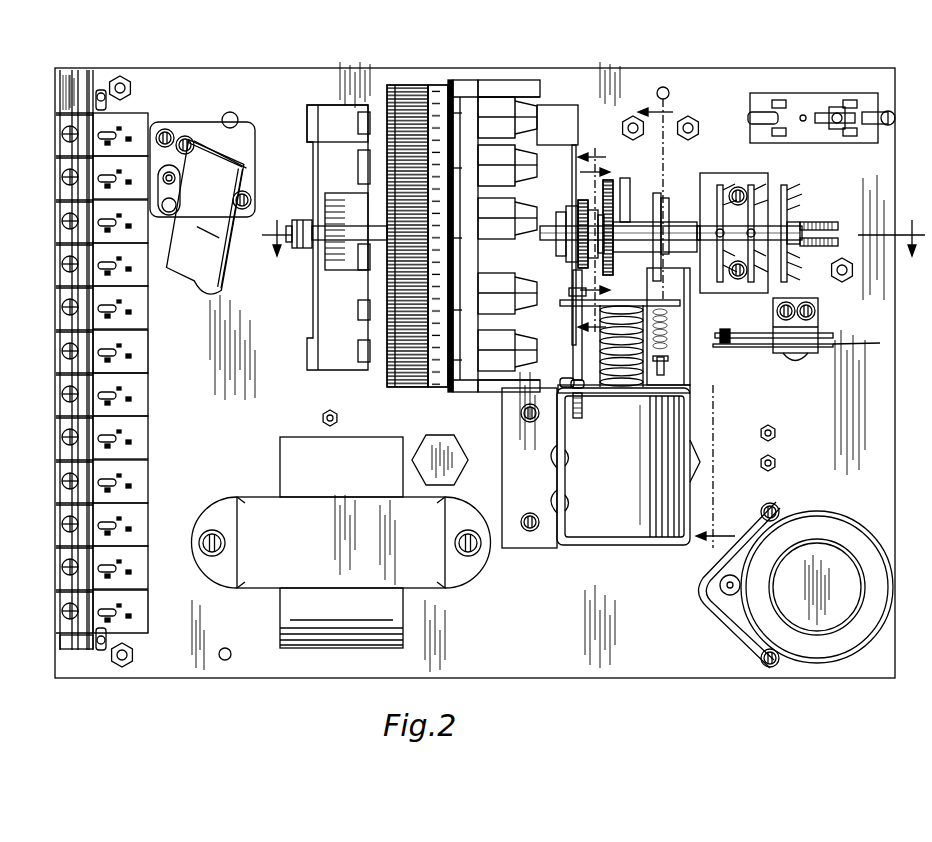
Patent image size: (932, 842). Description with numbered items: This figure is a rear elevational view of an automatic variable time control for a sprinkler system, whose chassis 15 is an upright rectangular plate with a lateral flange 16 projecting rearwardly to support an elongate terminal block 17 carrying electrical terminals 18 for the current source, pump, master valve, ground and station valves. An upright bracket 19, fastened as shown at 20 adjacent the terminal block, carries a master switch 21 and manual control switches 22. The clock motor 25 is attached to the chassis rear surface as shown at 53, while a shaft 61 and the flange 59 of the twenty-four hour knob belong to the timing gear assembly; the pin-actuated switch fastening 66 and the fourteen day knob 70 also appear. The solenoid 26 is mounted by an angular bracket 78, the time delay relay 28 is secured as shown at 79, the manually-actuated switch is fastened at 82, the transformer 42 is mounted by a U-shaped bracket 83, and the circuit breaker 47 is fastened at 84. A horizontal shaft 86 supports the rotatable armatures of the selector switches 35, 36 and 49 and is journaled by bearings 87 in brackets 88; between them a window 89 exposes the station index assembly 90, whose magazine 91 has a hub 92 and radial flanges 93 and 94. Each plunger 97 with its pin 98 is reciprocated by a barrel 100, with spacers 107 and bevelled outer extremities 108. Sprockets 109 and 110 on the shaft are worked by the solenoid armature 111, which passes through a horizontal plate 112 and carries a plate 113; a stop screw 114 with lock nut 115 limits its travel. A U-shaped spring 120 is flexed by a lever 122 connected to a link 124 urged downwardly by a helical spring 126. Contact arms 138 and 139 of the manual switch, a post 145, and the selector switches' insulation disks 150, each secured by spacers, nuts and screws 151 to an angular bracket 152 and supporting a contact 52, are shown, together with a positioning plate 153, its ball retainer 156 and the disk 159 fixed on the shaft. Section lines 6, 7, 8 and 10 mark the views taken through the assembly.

The chassis 15 is at (594, 678).
The lateral flange 16 is at (114, 72).
The terminal block 17 is at (60, 178).
The electrical terminals 18 is at (62, 348).
The bracket 19 is at (58, 92).
The fastening 20 is at (125, 668).
The master switch 21 is at (140, 615).
The manual control switches 22 is at (148, 345).
The clock motor 25 is at (860, 583).
The solenoid 26 is at (604, 545).
The time delay relay 28 is at (250, 144).
The multiple contact switch 35 is at (751, 185).
The single contact rotary switch 36 is at (720, 185).
The transformer 42 is at (280, 454).
The circuit breaker 47 is at (784, 93).
The rotary selector switch 49 is at (796, 196).
The contact 52 is at (760, 660).
The clock motor attachment 53 is at (722, 580).
The radial flange 59 is at (878, 344).
The shaft 61 is at (702, 466).
The switch fastening 66 is at (768, 456).
The knob 70 is at (452, 480).
The angular bracket 78 is at (532, 548).
The relay fastening 79 is at (172, 124).
The switch fastening 82 is at (818, 301).
The U-shaped bracket 83 is at (350, 488).
The circuit breaker fastening 84 is at (888, 112).
The horizontal shaft 86 is at (292, 242).
The bearings 87 is at (302, 250).
The brackets 88 is at (306, 192).
The window 89 is at (307, 350).
The station index assembly 90 is at (477, 92).
The magazine 91 is at (370, 100).
The axial hub 92 is at (358, 186).
The radial flange 93 is at (360, 314).
The radial flange 94 is at (462, 388).
The plunger 97 is at (497, 96).
The pin 98 is at (360, 226).
The barrel 100 is at (406, 386).
The spacers 107 is at (500, 152).
The outer extremities 108 is at (526, 128).
The sprocket 109 is at (640, 182).
The sprocket 110 is at (612, 182).
The armature 111 is at (628, 388).
The horizontal plate 112 is at (692, 392).
The bar or plate 113 is at (681, 303).
The stop screw 114 is at (573, 332).
The lock nut 115 is at (562, 386).
The U-shaped spring 120 is at (688, 352).
The lever 122 is at (657, 193).
The link 124 is at (669, 224).
The helical spring 126 is at (668, 334).
The contact arm 138 is at (764, 334).
The contact arm 139 is at (746, 348).
The post 145 is at (860, 250).
The insulation disk 150 is at (784, 185).
The spacers, nuts and screws 151 is at (846, 208).
The angular bracket 152 is at (701, 174).
The plate 153 is at (580, 256).
The ball retainer 156 is at (578, 216).
The disk 159 is at (566, 206).
The section line 6- 6 is at (687, 317).
The section line 7- 7 is at (595, 241).
The section line 8- 8 is at (598, 242).
The section line 10- 10 is at (593, 228).